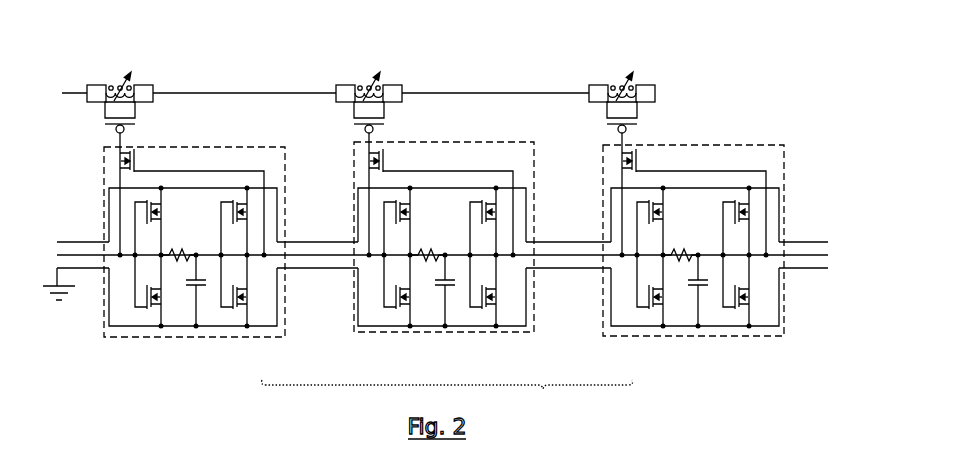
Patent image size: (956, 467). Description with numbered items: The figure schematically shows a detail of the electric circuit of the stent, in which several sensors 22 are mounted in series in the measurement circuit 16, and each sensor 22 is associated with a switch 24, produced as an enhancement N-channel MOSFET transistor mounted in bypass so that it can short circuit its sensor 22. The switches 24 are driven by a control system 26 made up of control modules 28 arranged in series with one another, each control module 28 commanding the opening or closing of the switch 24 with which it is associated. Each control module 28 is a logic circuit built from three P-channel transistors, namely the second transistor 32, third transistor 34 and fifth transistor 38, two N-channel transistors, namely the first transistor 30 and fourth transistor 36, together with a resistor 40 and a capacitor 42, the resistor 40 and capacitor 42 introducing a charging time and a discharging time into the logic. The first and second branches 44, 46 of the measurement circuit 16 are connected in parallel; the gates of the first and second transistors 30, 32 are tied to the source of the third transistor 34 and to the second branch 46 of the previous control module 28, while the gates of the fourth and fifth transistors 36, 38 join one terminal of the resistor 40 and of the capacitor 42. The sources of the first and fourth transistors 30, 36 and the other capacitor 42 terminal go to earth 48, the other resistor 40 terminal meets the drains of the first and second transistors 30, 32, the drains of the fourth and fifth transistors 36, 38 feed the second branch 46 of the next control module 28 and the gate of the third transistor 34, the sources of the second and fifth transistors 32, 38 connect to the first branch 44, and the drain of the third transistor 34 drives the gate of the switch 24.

The measurement circuit 16 is at (474, 83).
The sensor 22 is at (120, 78).
The switch 24 is at (115, 129).
The control system 26 is at (447, 399).
The control module 28 is at (234, 340).
The first transistor 30 is at (365, 296).
The second transistor 32 is at (365, 208).
The third transistor 34 is at (396, 158).
The fourth transistor 36 is at (485, 324).
The fifth transistor 38 is at (494, 183).
The resistor 40 is at (432, 241).
The capacitor 42 is at (438, 308).
The first branch 44 is at (293, 241).
The second branch 46 is at (312, 256).
The earth 48 is at (63, 268).